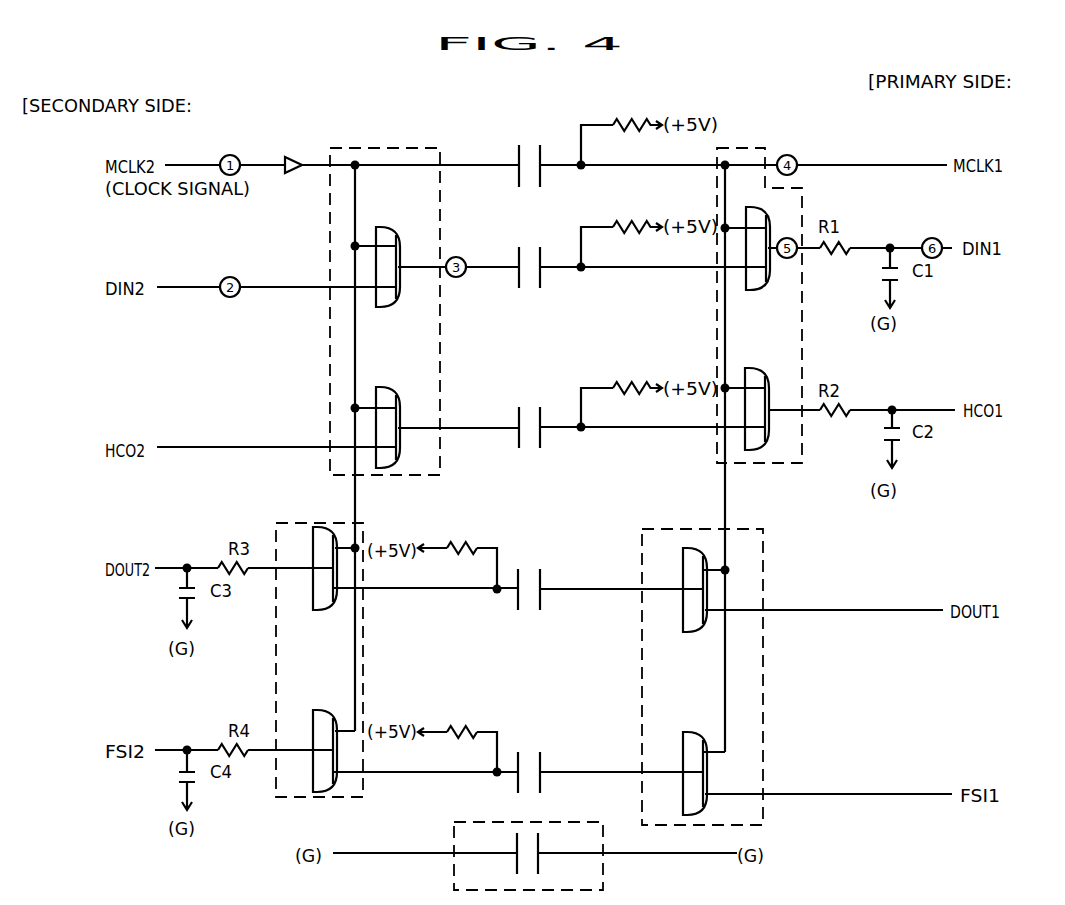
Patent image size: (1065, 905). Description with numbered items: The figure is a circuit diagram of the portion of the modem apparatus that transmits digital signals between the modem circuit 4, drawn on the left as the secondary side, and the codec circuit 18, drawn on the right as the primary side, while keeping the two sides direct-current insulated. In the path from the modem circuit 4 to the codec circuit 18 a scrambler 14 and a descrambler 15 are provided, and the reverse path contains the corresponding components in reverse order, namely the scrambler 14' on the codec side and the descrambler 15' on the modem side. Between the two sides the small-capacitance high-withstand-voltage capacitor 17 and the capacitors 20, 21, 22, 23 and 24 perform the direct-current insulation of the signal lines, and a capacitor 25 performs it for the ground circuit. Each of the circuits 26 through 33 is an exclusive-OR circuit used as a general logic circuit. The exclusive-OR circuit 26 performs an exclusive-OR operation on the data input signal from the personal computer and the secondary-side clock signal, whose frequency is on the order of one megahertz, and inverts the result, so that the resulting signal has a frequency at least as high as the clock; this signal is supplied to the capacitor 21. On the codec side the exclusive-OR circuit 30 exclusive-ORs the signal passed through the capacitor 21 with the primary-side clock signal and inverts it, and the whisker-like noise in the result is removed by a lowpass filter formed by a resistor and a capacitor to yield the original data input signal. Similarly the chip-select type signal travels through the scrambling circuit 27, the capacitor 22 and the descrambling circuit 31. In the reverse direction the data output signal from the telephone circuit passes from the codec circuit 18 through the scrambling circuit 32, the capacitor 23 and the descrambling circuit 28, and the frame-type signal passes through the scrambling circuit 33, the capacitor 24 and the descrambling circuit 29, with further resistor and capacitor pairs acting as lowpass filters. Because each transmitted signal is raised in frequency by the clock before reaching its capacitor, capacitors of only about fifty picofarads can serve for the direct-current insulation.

The modem circuit 4 is at (110, 133).
The scrambler 14 is at (388, 299).
The scrambler 14' is at (752, 665).
The descrambler 15 is at (789, 294).
The descrambler 15' is at (392, 649).
The small-capacitance high-withstand-voltage capacitor 17 is at (528, 856).
The codec circuit 18 is at (948, 108).
The capacitor 20 is at (512, 176).
The capacitor 21 is at (512, 278).
The capacitor 22 is at (512, 444).
The capacitor 23 is at (510, 604).
The capacitor 24 is at (510, 784).
The capacitor 25 is at (510, 858).
The exclusive-OR circuit (scrambling circuit) 26 is at (404, 245).
The scrambling circuit 27 is at (404, 407).
The descrambling circuit 28 is at (307, 536).
The descrambling circuit 29 is at (304, 721).
The exclusive-OR circuit (descrambling circuit) 30 is at (774, 233).
The descrambling circuit 31 is at (774, 396).
The scrambling circuit 32 is at (680, 576).
The scrambling circuit 33 is at (679, 760).